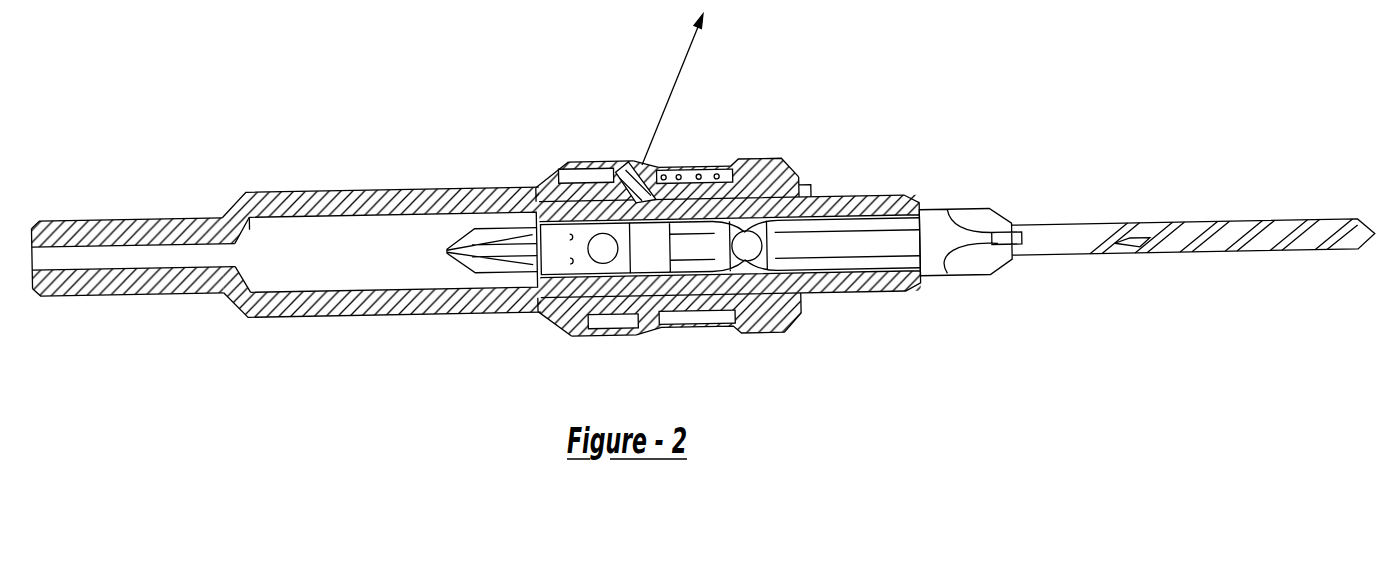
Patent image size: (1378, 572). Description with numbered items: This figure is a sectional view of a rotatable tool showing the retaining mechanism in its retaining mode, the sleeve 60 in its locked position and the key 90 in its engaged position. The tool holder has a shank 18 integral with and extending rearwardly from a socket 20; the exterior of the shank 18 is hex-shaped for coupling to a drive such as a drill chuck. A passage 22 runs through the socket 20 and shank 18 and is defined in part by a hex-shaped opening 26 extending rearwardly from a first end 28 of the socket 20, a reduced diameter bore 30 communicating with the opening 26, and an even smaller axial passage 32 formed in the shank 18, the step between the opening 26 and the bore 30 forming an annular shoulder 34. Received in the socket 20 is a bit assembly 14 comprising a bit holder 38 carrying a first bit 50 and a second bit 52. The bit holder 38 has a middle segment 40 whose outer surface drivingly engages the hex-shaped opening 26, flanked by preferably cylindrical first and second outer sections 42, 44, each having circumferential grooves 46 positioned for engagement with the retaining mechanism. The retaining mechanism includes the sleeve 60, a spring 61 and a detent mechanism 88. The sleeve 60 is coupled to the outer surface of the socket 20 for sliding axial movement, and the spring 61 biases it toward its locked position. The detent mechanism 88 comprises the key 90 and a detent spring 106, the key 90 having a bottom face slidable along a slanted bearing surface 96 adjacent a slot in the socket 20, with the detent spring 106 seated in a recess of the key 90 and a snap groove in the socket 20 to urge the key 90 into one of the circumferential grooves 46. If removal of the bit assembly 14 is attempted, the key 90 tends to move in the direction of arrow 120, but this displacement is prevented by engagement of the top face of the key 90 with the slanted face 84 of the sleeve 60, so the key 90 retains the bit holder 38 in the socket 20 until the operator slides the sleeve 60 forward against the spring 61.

The bit assembly 14 is at (975, 172).
The shank 18 is at (105, 218).
The socket 20 is at (401, 190).
The passage 22 is at (363, 259).
The hex-shaped opening 26 is at (780, 172).
The first end 28 is at (805, 300).
The reduced diameter bore 30 is at (318, 215).
The axial passage 32 is at (140, 245).
The annular shoulder 34 is at (556, 313).
The bit holder 38 is at (908, 188).
The middle segment 40 is at (740, 285).
The first outer section 42 is at (908, 284).
The second outer section 44 is at (592, 310).
The circumferential grooves 46 is at (808, 205).
The first bit 50 is at (1080, 210).
The second bit 52 is at (468, 230).
The sleeve 60 is at (634, 148).
The spring 61 is at (720, 175).
The slanted face 84 is at (652, 170).
The detent mechanism 88 is at (608, 186).
The key 90 is at (627, 186).
The slanted bearing surface 96 is at (562, 181).
The detent spring 106 is at (658, 168).
The arrow 120 is at (670, 85).